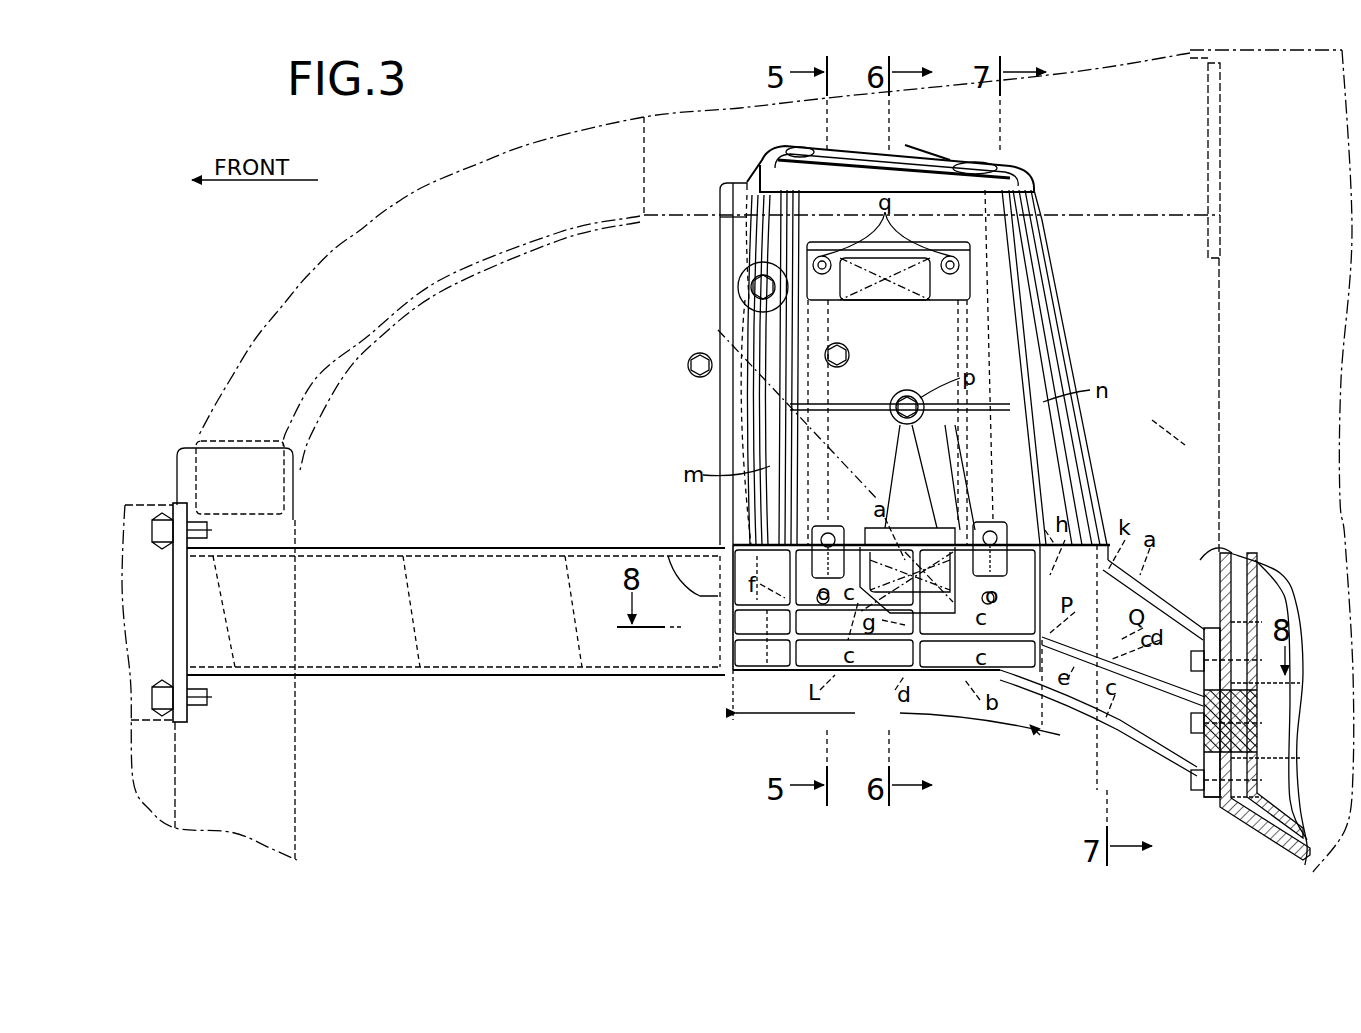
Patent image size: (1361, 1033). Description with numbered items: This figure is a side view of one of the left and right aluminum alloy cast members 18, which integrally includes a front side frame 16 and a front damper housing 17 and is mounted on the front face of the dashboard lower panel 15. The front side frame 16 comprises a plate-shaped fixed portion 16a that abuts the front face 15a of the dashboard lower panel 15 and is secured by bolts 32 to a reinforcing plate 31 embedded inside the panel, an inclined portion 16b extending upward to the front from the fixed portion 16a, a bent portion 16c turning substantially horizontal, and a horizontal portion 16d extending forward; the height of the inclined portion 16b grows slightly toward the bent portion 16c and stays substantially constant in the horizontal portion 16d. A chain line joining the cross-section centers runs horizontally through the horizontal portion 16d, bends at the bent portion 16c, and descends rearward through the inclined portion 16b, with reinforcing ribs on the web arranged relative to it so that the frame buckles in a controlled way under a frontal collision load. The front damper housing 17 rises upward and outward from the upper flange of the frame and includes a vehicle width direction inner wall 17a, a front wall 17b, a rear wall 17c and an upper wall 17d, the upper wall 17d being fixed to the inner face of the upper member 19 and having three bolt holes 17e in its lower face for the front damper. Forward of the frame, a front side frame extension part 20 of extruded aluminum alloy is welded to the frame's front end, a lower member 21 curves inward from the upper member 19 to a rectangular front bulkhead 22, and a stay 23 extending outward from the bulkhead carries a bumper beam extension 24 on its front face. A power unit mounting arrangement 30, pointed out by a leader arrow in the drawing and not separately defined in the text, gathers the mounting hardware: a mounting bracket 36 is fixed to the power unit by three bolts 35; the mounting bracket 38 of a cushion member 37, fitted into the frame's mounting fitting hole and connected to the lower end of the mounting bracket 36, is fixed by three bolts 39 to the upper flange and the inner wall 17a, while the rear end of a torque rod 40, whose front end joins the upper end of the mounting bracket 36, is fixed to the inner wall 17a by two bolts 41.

The dashboard lower panel 15 is at (1217, 325).
The front face 15a is at (1215, 570).
The front side frame 16 is at (1160, 590).
The fixed portion 16a is at (1208, 628).
The inclined portion 16b is at (1200, 803).
The bent portion 16c is at (1130, 787).
The horizontal portion 16d is at (896, 702).
The front damper housing 17 is at (1100, 462).
The vehicle width direction inner wall 17a is at (935, 375).
The front wall 17b is at (740, 235).
The rear wall 17c is at (1057, 303).
The upper wall 17d is at (960, 160).
The bolt holes 17e is at (800, 146).
The cast member 18 is at (1140, 420).
The upper member 19 is at (1128, 215).
The front side frame extension part 20 is at (482, 565).
The lower member 21 is at (528, 128).
The front bulkhead 22 is at (297, 740).
The stay 23 is at (187, 650).
The bumper beam extension 24 is at (152, 503).
The reinforcing structure 30 is at (713, 333).
The reinforcing plate 31 is at (1257, 742).
The bolts 32 is at (1188, 780).
The bolts 35 is at (740, 274).
The mounting bracket 36 is at (745, 410).
The cushion member 37 is at (917, 528).
The mounting bracket 38 is at (972, 500).
The bolts 39 is at (905, 425).
The torque rod 40 is at (789, 247).
The bolts 41 is at (970, 293).